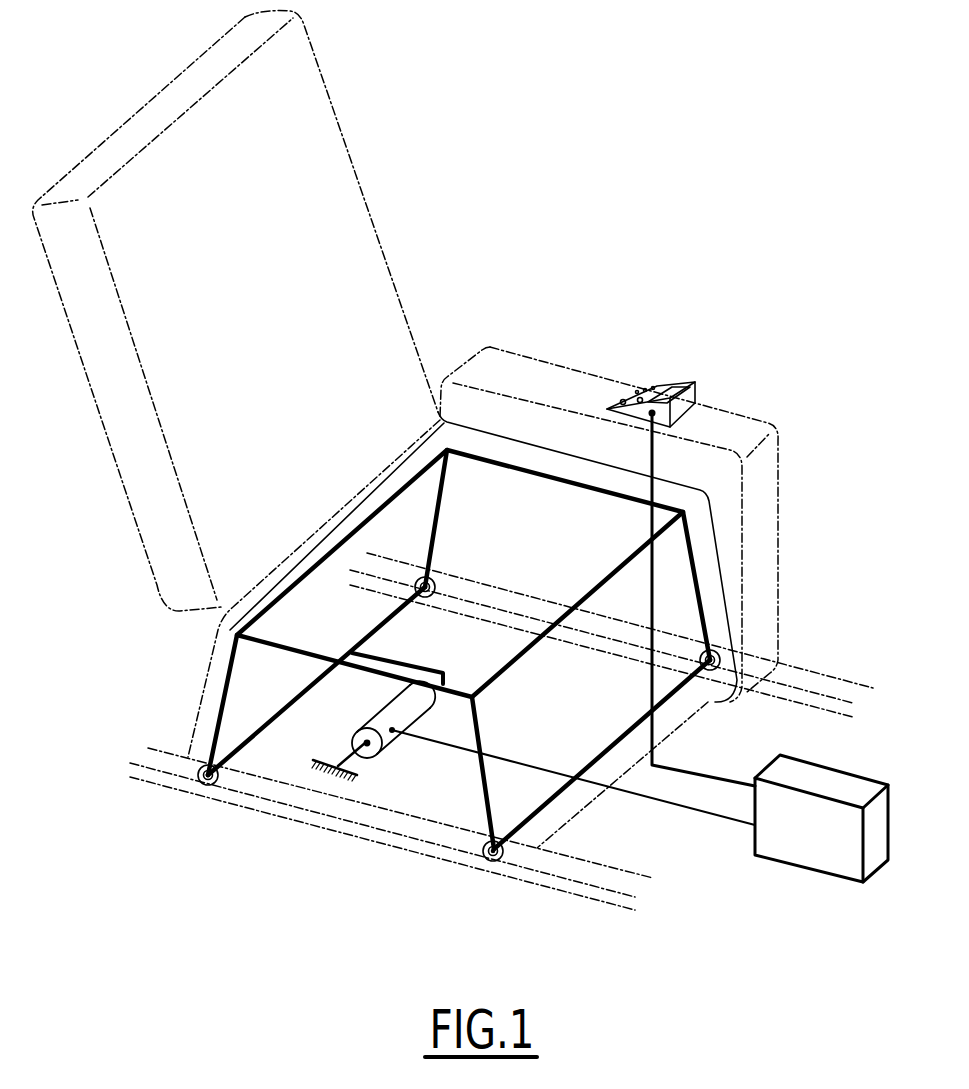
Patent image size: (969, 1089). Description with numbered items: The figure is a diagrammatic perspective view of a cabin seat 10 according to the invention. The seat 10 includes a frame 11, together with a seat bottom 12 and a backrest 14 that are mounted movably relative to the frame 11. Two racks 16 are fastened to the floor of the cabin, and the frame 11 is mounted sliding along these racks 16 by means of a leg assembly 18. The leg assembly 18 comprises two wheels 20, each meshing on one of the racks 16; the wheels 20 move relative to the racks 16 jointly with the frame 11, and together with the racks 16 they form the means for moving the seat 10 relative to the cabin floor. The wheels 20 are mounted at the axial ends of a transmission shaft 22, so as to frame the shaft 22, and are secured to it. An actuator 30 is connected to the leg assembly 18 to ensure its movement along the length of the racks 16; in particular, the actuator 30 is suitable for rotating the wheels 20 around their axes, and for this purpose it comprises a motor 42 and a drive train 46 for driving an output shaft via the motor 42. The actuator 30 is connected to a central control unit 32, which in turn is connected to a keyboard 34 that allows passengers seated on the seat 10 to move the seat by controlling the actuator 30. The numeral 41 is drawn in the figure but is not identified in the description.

The seat 10 is at (636, 206).
The frame 11 is at (760, 515).
The seat bottom 12 is at (514, 457).
The backrest 14 is at (348, 233).
The racks 16 is at (827, 687).
The leg assembly 18 is at (700, 588).
The wheels 20 is at (437, 581).
The transmission shaft 22 is at (292, 702).
The actuator 30 is at (472, 636).
The central control unit 32 is at (638, 646).
The keyboard 34 is at (672, 388).
The actuator rod 41 is at (255, 741).
The motor 42 is at (388, 742).
The drive train 46 is at (384, 655).